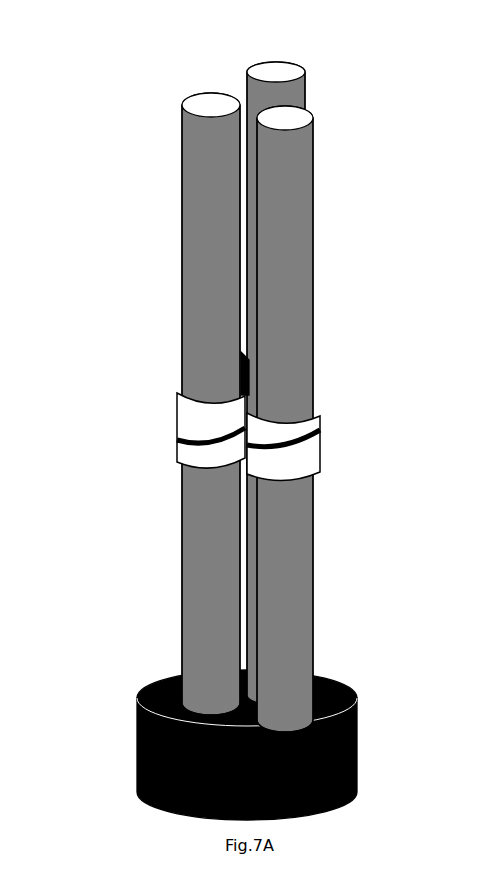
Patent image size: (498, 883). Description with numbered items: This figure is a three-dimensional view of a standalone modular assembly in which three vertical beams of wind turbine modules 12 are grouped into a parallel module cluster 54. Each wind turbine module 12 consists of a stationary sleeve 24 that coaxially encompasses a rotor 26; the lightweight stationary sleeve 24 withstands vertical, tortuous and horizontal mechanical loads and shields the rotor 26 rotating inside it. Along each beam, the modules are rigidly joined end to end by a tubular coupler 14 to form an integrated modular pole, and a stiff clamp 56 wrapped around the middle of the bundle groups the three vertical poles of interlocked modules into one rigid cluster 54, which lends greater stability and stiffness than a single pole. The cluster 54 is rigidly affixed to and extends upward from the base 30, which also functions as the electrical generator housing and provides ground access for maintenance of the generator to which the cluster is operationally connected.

The wind turbine module 12 is at (303, 220).
The tubular coupler 14 is at (177, 435).
The stationary sleeve 24 is at (218, 92).
The rotor 26 is at (264, 78).
The base 30 is at (137, 712).
The parallel module cluster 54 is at (230, 376).
The stiff clamp 56 is at (300, 425).